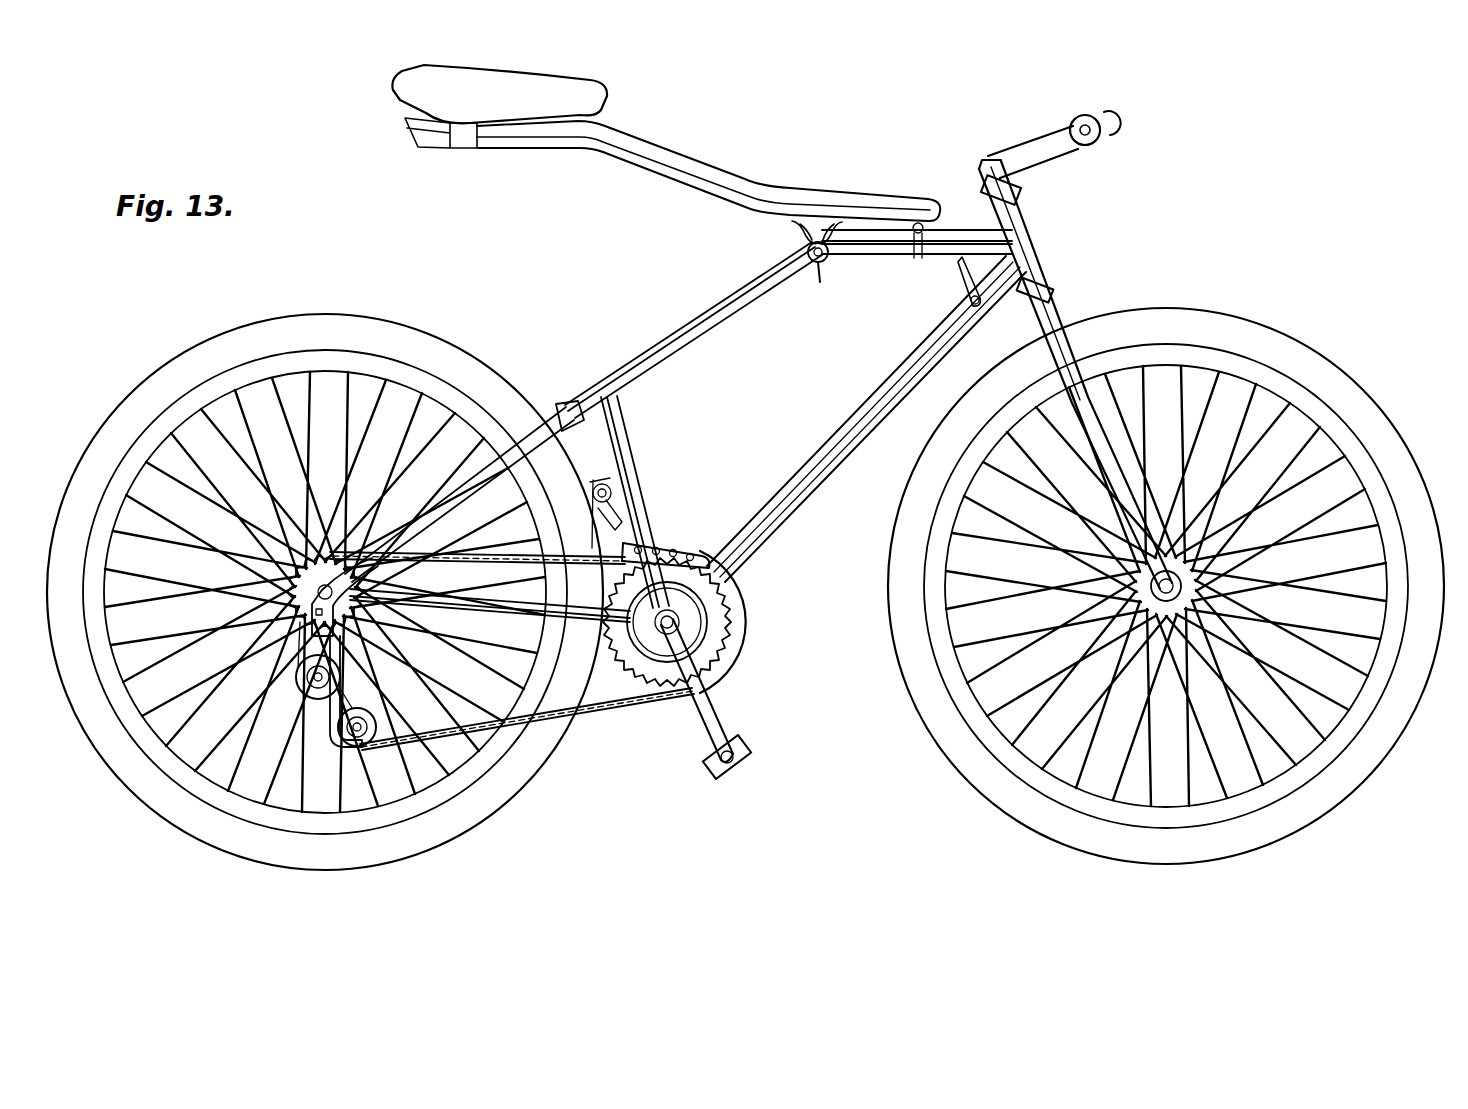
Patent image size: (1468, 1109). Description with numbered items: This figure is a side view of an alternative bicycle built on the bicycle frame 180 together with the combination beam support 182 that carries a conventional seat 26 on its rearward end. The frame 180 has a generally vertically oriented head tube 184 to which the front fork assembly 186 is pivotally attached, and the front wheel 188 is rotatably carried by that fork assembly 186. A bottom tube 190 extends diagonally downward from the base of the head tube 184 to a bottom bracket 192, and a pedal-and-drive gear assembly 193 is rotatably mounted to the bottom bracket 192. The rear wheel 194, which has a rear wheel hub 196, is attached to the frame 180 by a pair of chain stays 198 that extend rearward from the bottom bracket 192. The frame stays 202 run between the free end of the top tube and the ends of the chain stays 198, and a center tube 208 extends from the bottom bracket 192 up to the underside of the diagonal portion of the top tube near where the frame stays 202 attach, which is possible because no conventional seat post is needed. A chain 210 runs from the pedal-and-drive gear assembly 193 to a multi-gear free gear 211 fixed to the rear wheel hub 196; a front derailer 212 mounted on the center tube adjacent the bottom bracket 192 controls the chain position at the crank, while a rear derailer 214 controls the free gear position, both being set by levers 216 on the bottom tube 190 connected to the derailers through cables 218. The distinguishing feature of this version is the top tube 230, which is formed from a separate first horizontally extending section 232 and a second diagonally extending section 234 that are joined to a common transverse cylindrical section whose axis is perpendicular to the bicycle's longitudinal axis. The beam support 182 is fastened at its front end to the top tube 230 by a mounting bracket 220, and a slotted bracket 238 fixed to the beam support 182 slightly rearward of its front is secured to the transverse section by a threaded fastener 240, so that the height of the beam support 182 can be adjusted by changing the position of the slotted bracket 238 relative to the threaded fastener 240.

The seat 26 is at (395, 97).
The bicycle frame 180 is at (1122, 177).
The combination beam support 182 is at (698, 158).
The head tube 184 is at (1027, 228).
The front fork assembly 186 is at (1052, 288).
The front wheel 188 is at (899, 697).
The bottom tube 190 is at (828, 440).
The bottom bracket 192 is at (730, 602).
The pedal-and-drive gear assembly 193 is at (760, 656).
The rear wheel 194 is at (212, 333).
The rear wheel hub 196 is at (288, 606).
The chain stays 198 is at (350, 612).
The frame stays 202 is at (545, 408).
The center tube 208 is at (648, 503).
The chain 210 is at (342, 662).
The multi-gear free gear 211 is at (300, 578).
The front derailer 212 is at (672, 543).
The rear derailer 214 is at (358, 737).
The levers 216 is at (950, 288).
The cables 218 is at (770, 502).
The mounting bracket 220 is at (919, 223).
The top tube 230 is at (738, 355).
The first horizontally extending section 232 is at (921, 262).
The second diagonally extending section 234 is at (690, 320).
The slotted bracket 238 is at (793, 229).
The threaded fastener 240 is at (808, 252).